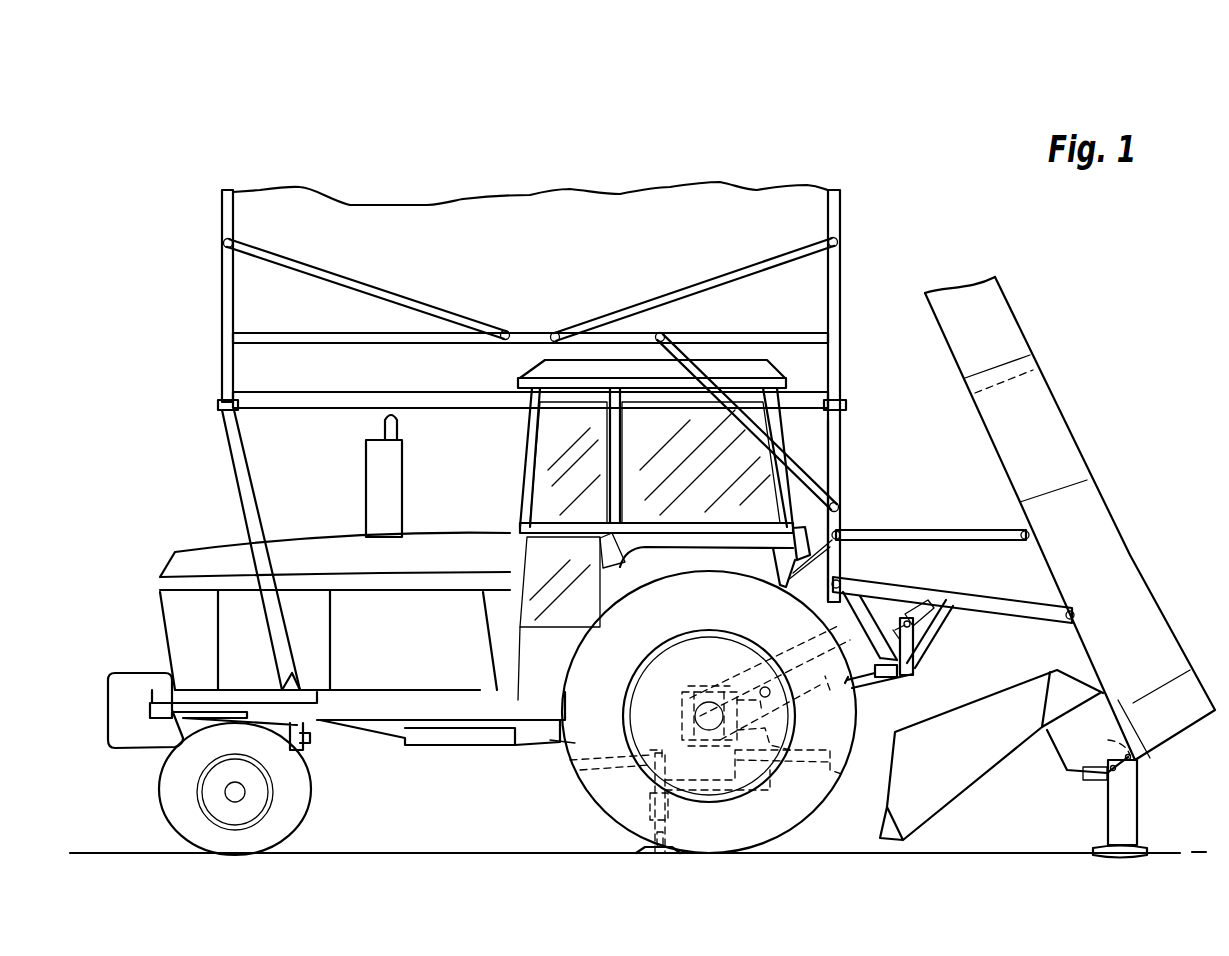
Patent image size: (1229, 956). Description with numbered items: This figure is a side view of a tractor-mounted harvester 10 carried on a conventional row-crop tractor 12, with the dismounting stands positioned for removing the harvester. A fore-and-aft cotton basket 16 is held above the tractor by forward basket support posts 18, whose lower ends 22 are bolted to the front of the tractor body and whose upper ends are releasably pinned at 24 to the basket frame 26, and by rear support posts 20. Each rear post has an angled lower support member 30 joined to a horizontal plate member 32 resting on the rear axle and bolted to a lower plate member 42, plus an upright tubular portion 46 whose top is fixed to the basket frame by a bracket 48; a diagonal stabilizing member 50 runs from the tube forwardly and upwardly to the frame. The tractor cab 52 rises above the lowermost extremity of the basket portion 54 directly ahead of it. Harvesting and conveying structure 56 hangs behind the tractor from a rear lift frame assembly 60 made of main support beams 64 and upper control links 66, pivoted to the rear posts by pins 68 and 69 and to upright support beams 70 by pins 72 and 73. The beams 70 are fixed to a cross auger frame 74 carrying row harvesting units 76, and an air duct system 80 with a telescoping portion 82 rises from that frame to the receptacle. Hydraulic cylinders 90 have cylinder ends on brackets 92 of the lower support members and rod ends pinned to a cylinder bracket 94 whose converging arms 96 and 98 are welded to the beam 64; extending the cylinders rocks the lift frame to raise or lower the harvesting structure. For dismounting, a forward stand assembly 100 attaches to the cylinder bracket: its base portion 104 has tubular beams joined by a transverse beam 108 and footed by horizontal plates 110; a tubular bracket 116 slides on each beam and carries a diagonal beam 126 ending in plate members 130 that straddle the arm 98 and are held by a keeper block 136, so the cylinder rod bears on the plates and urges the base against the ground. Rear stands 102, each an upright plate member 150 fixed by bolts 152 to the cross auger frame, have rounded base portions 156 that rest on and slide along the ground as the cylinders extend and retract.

The tractor-mounted harvester 10 is at (936, 232).
The row-crop tractor 12 is at (168, 530).
The cotton basket 16 is at (210, 208).
The forward basket support posts 18 is at (245, 444).
The rear support posts 20 is at (848, 437).
The lower ends of forward posts 22 is at (278, 690).
The pinned connection 24 is at (218, 405).
The basket frame 26 is at (293, 343).
The lower support member 30 is at (778, 585).
The horizontal plate member 32 is at (682, 697).
The lower plate member 42 is at (682, 726).
The upright tubular portion 46 is at (841, 467).
The bracket 48 is at (846, 405).
The diagonal stabilizing member 50 is at (808, 455).
The cab 52 is at (522, 439).
The basket portion 54 is at (236, 356).
The harvesting and conveying structure 56 is at (1172, 540).
The rear lift frame assembly 60 is at (938, 520).
The main support beams 64 is at (970, 598).
The upper control links 66 is at (950, 531).
The pin 68 is at (850, 585).
The pin 69 is at (843, 540).
The upright support beams 70 is at (1043, 578).
The pin 72 is at (1078, 615).
The pin 73 is at (1032, 535).
The cross auger frame 74 is at (1095, 785).
The row harvesting units 76 is at (968, 740).
The air duct system 80 is at (1150, 602).
The telescoping portion 82 is at (1052, 350).
The hydraulic cylinders 90 is at (820, 672).
The brackets 92 is at (772, 720).
The cylinder bracket 94 is at (999, 657).
The arm 96 is at (870, 640).
The arm 98 is at (920, 648).
The forward stand assembly 100 is at (830, 732).
The rear stands 102 is at (1142, 778).
The base portion 104 is at (636, 828).
The transverse beam 108 is at (672, 836).
The horizontal plate 110 is at (650, 853).
The tubular bracket 116 is at (650, 788).
The diagonal beam 126 is at (880, 684).
The plate members 130 is at (913, 665).
The keeper block 136 is at (975, 648).
The upright plate member 150 is at (1115, 818).
The bolts 152 is at (1112, 748).
The rounded base portion 156 is at (1142, 848).